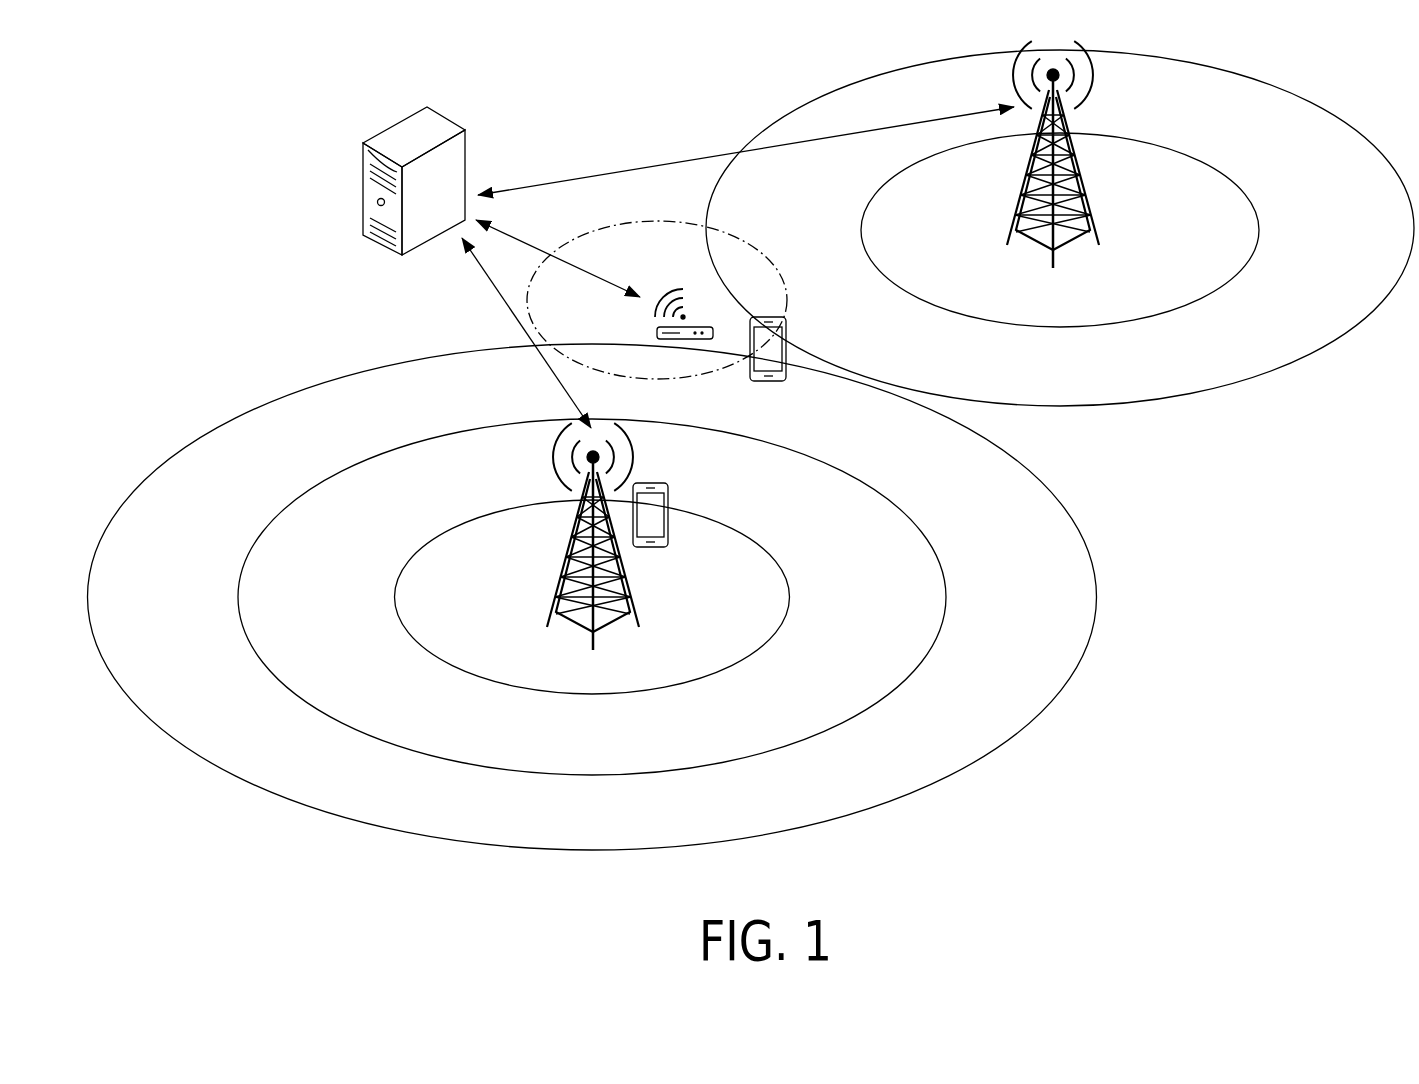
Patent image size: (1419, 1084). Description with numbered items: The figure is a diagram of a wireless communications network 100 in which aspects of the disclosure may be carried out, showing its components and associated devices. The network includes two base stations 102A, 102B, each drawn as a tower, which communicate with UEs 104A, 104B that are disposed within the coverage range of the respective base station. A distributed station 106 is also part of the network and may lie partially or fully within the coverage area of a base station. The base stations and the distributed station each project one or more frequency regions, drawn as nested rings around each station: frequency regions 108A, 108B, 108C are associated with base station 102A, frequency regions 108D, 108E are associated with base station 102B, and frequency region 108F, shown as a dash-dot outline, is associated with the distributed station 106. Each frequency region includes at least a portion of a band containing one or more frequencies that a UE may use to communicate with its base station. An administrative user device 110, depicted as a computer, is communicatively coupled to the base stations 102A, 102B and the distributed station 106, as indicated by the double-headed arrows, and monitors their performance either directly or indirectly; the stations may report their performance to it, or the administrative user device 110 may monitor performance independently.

The wireless communications network 100 is at (183, 190).
The base station 102A is at (558, 457).
The base station 102B is at (1020, 77).
The UE 104A is at (668, 494).
The UE 104B is at (786, 340).
The distributed station 106 is at (667, 293).
The frequency region 108A is at (662, 676).
The frequency region 108B is at (692, 749).
The frequency region 108C is at (724, 824).
The frequency region 108D is at (1140, 308).
The frequency region 108E is at (1164, 382).
The frequency region 108F is at (597, 309).
The administrative user device 110 is at (413, 118).